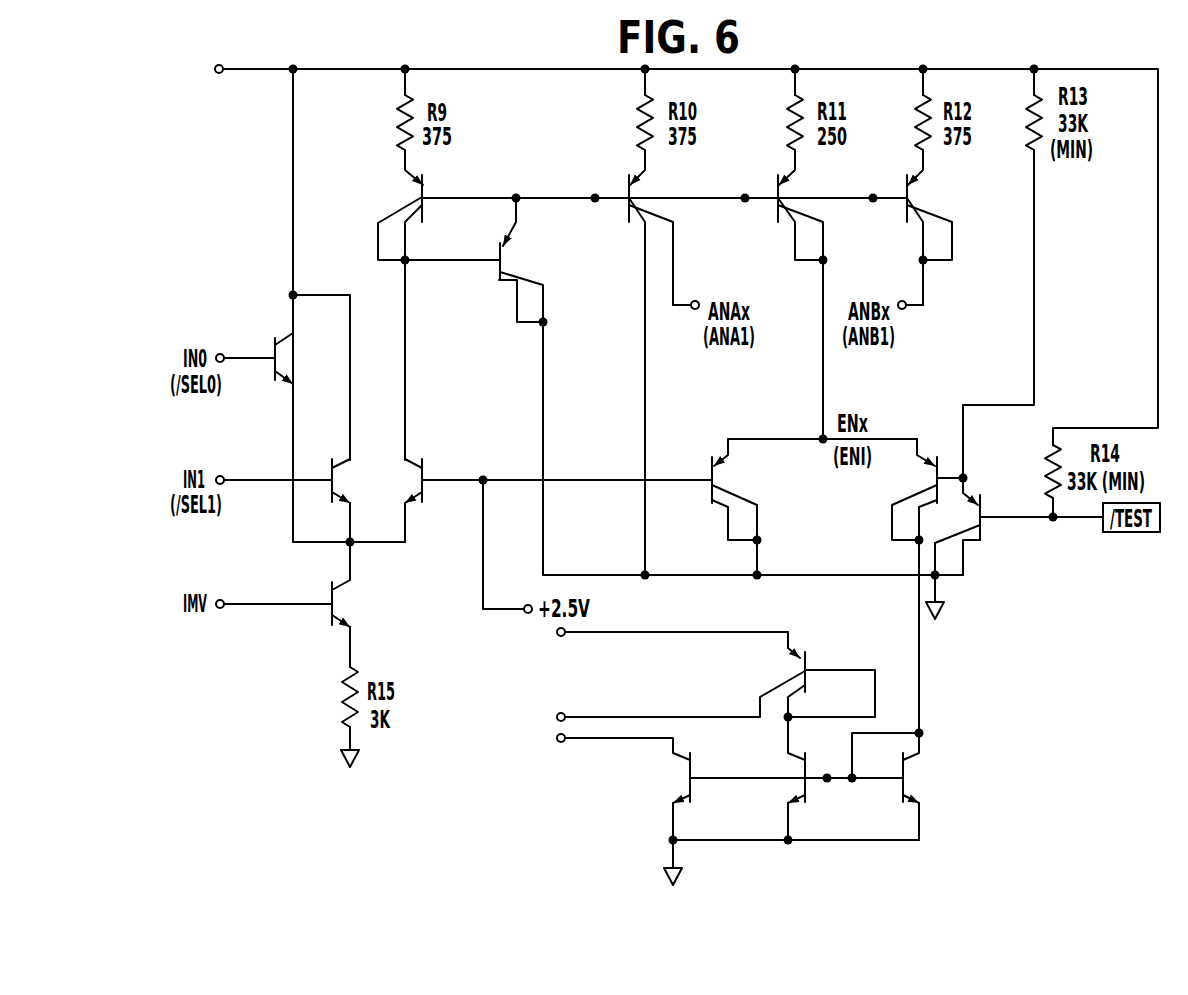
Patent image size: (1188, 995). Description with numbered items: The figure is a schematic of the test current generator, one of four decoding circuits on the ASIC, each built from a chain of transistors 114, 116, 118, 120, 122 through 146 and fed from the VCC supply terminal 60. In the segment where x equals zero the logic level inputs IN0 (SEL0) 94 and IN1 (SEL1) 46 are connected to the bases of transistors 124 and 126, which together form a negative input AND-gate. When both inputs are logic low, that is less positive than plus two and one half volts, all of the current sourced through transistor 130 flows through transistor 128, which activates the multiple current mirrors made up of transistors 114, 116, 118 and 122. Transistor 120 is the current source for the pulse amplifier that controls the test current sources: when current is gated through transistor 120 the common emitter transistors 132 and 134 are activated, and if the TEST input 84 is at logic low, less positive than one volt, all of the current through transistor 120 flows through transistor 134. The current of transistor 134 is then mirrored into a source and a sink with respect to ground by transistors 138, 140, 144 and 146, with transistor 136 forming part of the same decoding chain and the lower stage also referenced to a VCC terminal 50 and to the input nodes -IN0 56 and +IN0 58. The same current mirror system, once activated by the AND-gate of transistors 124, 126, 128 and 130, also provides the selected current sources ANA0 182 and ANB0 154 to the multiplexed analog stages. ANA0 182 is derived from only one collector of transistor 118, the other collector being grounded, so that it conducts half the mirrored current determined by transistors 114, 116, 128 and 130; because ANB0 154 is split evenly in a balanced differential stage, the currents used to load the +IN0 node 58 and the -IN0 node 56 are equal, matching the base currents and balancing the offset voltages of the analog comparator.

The VCC supply terminal 60 is at (219, 74).
The SEL0 input 94 is at (197, 345).
The IN1 (/SEL1) input terminal 46 is at (223, 477).
The transistor 124 is at (289, 333).
The transistor 126 is at (346, 472).
The transistor 128 is at (412, 461).
The transistor 130 is at (339, 628).
The transistor 114 is at (416, 186).
The transistor 116 is at (505, 246).
The transistor 118 is at (630, 185).
The transistor 120 is at (779, 185).
The transistor 122 is at (908, 185).
The ANA0 current source 182 is at (698, 302).
The ANB0 current source 154 is at (900, 302).
The transistor 132 is at (722, 465).
The transistor 134 is at (929, 466).
The transistor 136 is at (973, 503).
The transistor 138 is at (800, 658).
The transistor 140 is at (680, 765).
The transistor 144 is at (793, 765).
The transistor 146 is at (917, 757).
The VCC terminal 50 is at (563, 637).
The -IN0 node 56 is at (558, 712).
The +IN0 input node 58 is at (563, 742).
The TEST input 84 is at (1130, 533).